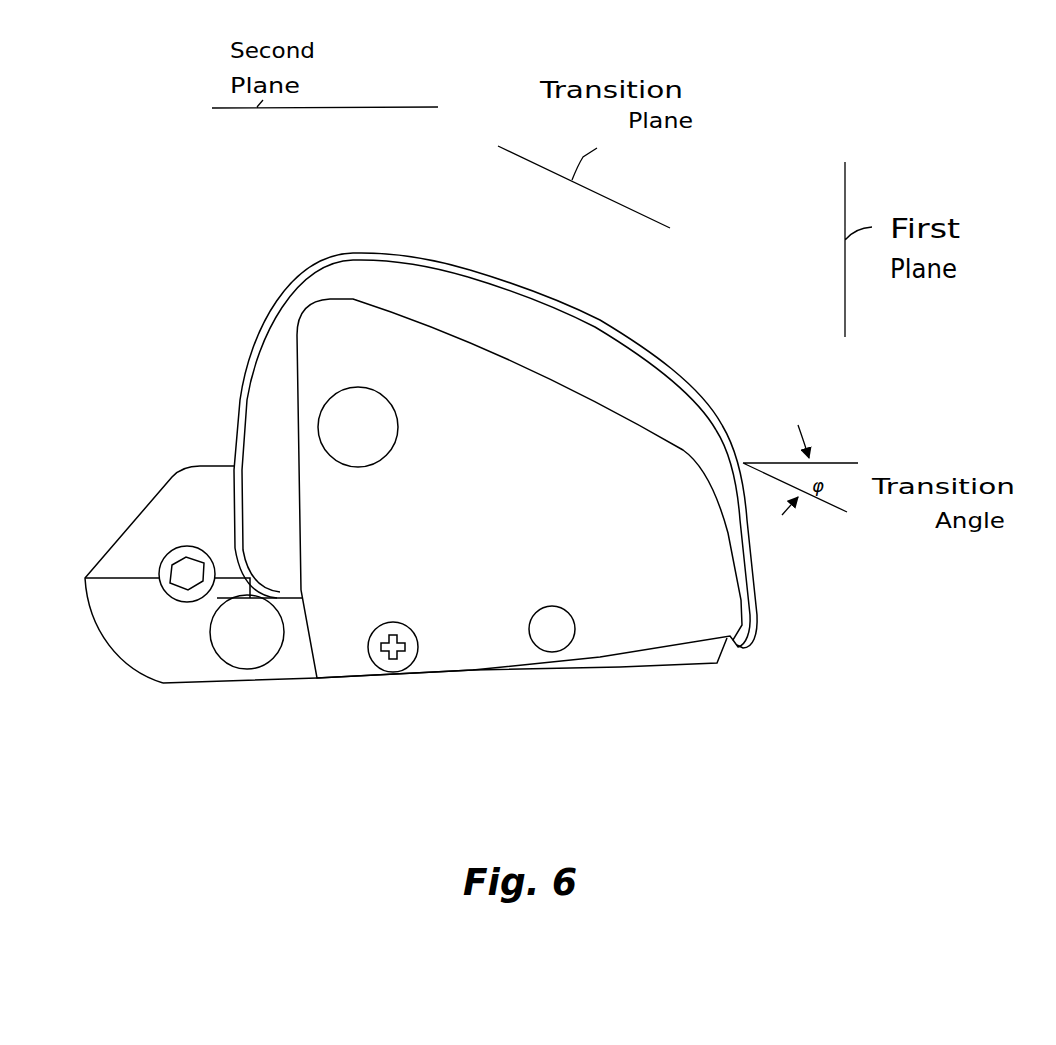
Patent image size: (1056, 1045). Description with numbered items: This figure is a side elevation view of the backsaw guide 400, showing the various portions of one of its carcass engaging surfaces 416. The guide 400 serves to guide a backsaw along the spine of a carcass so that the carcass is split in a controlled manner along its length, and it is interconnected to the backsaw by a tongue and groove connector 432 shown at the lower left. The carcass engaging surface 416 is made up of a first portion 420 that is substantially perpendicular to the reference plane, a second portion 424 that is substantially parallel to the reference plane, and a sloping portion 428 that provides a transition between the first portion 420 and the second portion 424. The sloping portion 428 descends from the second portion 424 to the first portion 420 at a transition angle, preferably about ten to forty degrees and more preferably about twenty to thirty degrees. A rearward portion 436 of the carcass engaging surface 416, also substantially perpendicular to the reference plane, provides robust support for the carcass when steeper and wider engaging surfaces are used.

The backsaw guide 400 is at (482, 488).
The carcass engaging surfaces 416 is at (765, 622).
The first portion 420 is at (759, 592).
The second portion 424 is at (343, 252).
The sloping portion 428 is at (605, 325).
The tongue and groove connector 432 is at (138, 650).
The rearward portion 436 is at (250, 553).